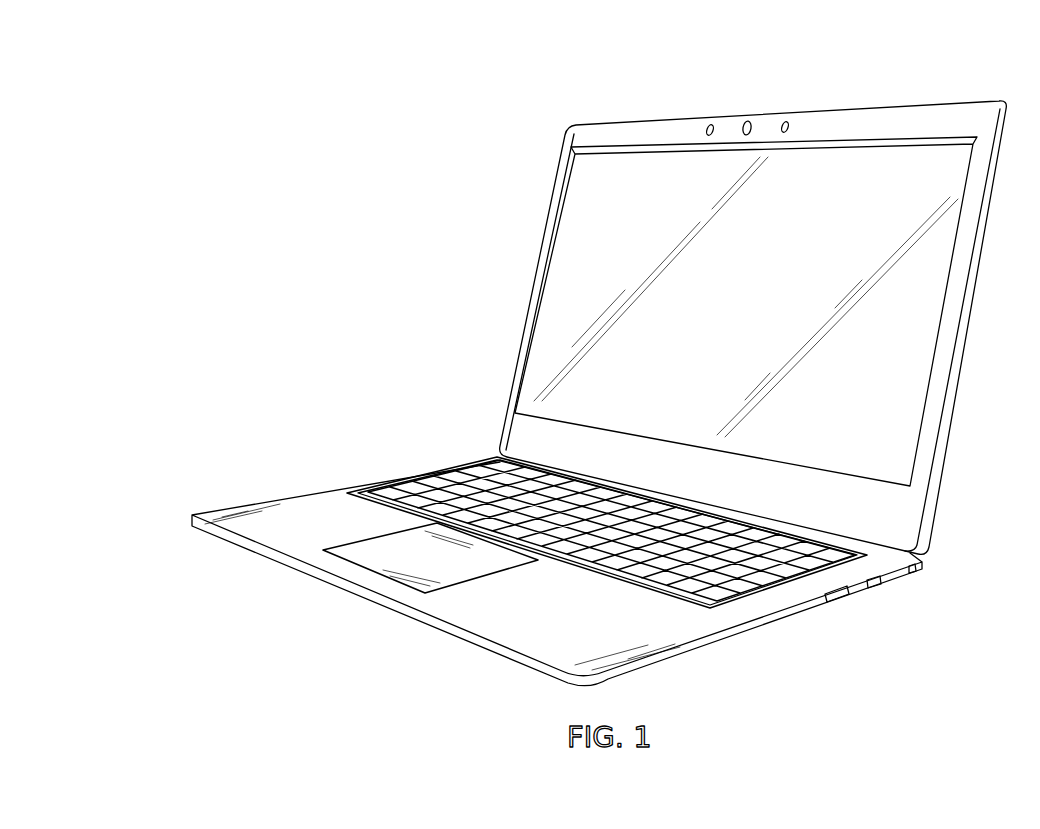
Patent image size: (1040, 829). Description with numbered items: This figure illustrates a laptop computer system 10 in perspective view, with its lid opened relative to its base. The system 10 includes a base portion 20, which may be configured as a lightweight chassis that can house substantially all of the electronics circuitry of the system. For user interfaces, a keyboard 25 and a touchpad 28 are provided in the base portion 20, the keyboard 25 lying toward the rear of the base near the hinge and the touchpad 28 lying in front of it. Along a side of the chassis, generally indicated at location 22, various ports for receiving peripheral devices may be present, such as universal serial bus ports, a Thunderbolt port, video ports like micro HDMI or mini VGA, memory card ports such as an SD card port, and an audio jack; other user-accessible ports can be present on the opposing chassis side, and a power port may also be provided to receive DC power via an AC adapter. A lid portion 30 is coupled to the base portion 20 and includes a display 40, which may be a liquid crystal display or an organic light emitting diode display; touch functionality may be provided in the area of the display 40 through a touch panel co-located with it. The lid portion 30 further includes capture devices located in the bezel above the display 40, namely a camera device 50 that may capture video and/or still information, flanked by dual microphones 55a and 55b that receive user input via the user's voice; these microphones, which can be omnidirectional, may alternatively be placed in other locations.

The system 10 is at (599, 355).
The base portion 20 is at (557, 549).
The location of ports 22 is at (882, 581).
The keyboard 25 is at (423, 476).
The touchpad 28 is at (394, 564).
The lid portion 30 is at (732, 304).
The display 40 is at (716, 311).
The camera device 50 is at (748, 122).
The microphone 55a is at (709, 125).
The microphone 55b is at (785, 122).